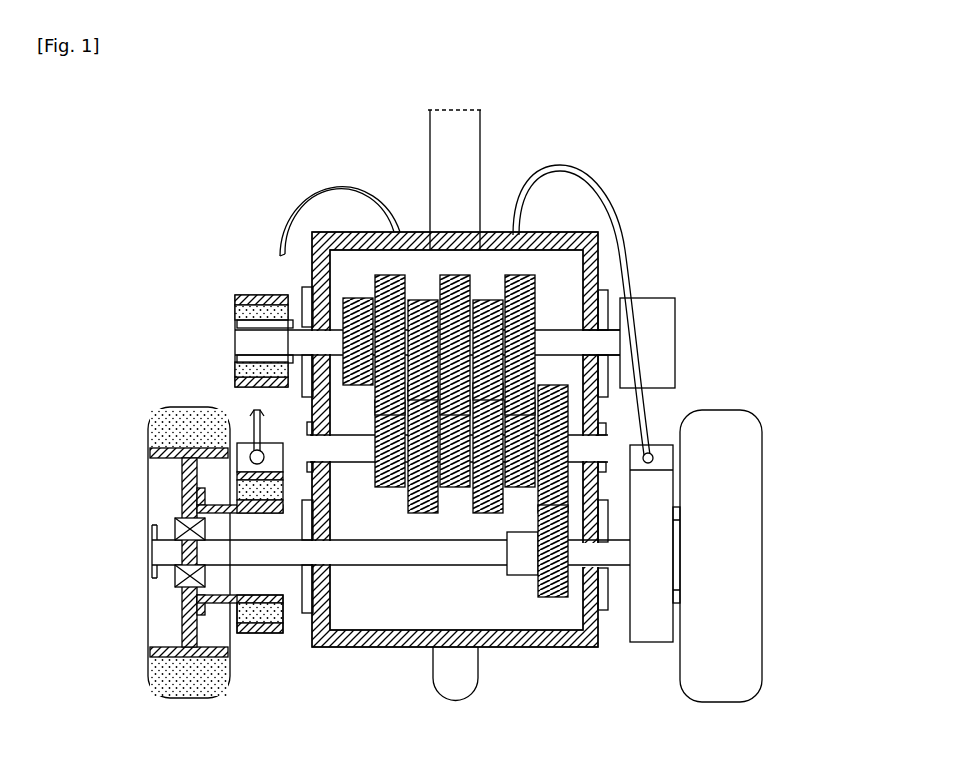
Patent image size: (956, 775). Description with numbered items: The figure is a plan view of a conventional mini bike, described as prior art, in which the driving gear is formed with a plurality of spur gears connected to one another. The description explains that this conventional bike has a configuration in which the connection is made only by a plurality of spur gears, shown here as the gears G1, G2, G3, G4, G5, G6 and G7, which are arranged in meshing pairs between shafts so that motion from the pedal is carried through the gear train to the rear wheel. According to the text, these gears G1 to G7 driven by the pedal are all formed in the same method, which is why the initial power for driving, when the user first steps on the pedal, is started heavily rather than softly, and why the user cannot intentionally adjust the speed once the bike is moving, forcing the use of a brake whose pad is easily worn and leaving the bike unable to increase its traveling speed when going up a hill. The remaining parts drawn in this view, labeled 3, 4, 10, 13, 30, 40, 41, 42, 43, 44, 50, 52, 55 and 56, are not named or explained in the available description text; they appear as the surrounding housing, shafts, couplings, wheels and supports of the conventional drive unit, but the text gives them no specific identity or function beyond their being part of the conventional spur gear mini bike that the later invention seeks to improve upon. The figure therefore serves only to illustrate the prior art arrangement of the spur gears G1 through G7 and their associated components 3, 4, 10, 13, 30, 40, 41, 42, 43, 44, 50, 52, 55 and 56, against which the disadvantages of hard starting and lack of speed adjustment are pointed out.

The engine 3 is at (235, 307).
The bearing 4 is at (175, 520).
The oil drain 10 is at (465, 675).
The intake pipe 13 is at (470, 145).
The engine unit 30 is at (250, 295).
The transmission housing 40 is at (556, 262).
The input shaft end / connector 41 is at (563, 322).
The shift lever and intermediate shaft 42 is at (341, 440).
The output axle shaft 43 is at (393, 553).
The wheel 44 is at (157, 428).
The electric motor 50 is at (653, 545).
The exhaust pipe 52 is at (350, 170).
The clutch 55 is at (285, 597).
The clutch 56 is at (253, 635).
The gear G1 is at (361, 354).
The gear G2 is at (392, 458).
The gear G3 is at (407, 345).
The gear G4 is at (457, 458).
The gear G5 is at (488, 338).
The gear G6 is at (522, 458).
The gear G7 is at (540, 555).